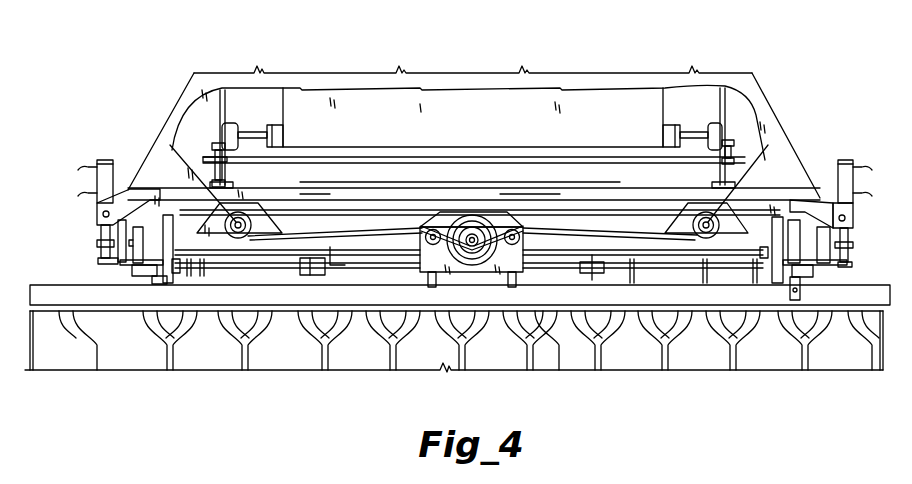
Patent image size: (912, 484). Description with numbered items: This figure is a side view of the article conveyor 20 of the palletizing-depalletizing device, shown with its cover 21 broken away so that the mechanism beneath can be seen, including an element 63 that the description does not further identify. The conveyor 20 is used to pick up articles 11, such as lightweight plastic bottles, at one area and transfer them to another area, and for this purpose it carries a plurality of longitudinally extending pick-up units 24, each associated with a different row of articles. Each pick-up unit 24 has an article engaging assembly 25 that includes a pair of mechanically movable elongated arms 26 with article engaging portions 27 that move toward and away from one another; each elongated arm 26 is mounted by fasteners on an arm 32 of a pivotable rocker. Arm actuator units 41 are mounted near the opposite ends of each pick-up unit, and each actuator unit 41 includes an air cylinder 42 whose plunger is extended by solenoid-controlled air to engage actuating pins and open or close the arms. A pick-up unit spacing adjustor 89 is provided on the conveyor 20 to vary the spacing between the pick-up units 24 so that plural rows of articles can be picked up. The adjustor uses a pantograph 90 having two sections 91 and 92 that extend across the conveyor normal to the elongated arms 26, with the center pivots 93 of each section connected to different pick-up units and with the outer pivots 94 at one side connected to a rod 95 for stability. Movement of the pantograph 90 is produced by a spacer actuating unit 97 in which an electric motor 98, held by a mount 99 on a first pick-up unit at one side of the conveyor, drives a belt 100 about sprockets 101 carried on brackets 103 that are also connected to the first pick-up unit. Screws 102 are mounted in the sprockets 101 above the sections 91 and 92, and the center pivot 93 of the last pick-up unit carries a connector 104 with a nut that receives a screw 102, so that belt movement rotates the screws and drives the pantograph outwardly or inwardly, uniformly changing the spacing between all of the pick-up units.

The articles 11 is at (565, 358).
The article conveyor 20 is at (170, 70).
The cover 21 is at (762, 106).
The pick-up unit 24 is at (368, 311).
The article engaging assembly 25 is at (107, 312).
The elongated arm 26 is at (502, 311).
The article engaging portion 27 is at (432, 311).
The arm 32 is at (160, 312).
The arm actuator unit 41 is at (93, 250).
The air cylinder 42 is at (99, 158).
The drum 63 is at (315, 97).
The pick-up unit spacing adjustor 89 is at (399, 178).
The pantograph 90 is at (236, 313).
The section 91 is at (213, 311).
The section 92 is at (746, 311).
The center pivot 93 is at (258, 313).
The outer pivot 94 is at (180, 313).
The rod 95 is at (409, 256).
The spacer actuating unit 97 is at (371, 216).
The electric motor 98 is at (472, 228).
The mount 99 is at (493, 210).
The belt 100 is at (580, 232).
The sprocket 101 is at (182, 158).
The screw 102 is at (238, 222).
The bracket 103 is at (285, 228).
The connector 104 is at (590, 270).